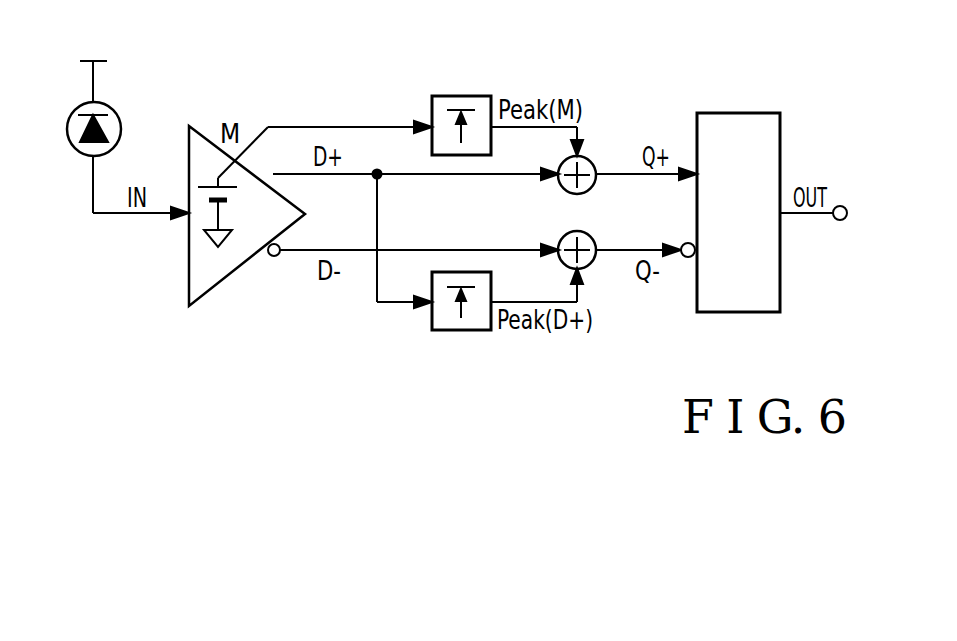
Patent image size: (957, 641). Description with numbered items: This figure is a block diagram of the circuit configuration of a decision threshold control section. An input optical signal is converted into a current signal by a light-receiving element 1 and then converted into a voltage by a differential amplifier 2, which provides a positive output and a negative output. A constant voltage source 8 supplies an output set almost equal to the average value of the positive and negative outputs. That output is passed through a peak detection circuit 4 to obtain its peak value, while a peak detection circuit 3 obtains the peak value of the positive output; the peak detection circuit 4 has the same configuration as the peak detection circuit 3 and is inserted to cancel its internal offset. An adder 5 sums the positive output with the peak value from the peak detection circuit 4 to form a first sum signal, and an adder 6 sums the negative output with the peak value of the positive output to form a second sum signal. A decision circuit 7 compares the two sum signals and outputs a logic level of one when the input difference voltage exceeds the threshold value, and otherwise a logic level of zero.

The light-receiving element 1 is at (114, 109).
The differential amplifier 2 is at (232, 273).
The peak detection circuit 3 is at (457, 332).
The peak detection circuit 4 is at (465, 95).
The adder 5 is at (593, 157).
The adder 6 is at (592, 265).
The decision circuit 7 is at (740, 112).
The constant voltage source 8 is at (213, 185).